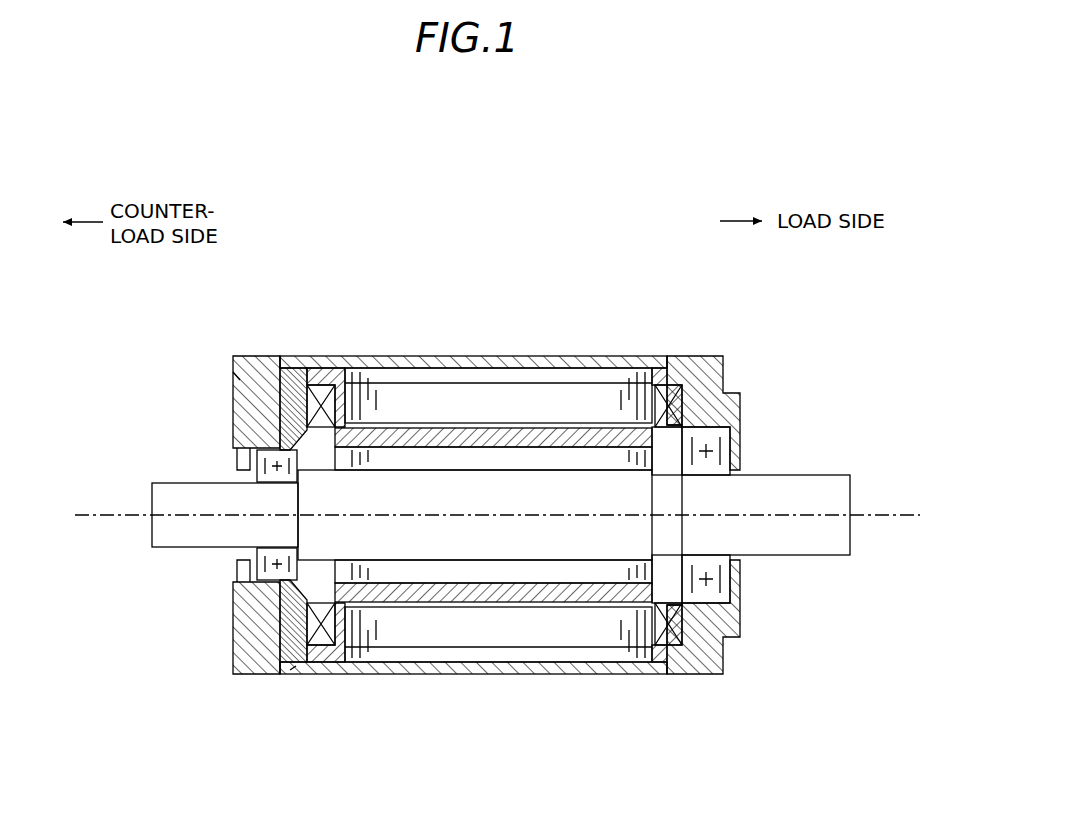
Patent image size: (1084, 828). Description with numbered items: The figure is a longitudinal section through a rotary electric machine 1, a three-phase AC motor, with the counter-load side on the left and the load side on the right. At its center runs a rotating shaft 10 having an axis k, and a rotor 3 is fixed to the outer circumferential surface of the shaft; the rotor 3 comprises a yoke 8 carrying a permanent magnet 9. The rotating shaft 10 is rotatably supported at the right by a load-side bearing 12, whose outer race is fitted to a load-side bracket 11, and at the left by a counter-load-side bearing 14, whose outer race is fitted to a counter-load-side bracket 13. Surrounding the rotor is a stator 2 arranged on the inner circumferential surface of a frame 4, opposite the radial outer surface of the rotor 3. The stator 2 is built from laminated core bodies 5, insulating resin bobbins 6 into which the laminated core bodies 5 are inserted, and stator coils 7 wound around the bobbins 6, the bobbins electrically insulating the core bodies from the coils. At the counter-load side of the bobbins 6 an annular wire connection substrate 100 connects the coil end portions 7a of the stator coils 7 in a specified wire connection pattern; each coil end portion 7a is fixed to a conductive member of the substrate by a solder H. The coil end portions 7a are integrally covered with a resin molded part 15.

The rotary electric machine 1 is at (568, 261).
The stator 2 is at (424, 391).
The rotor 3 is at (456, 572).
The frame 4 is at (378, 675).
The laminated core body 5 is at (469, 392).
The bobbin 6 is at (318, 385).
The stator coil 7 is at (340, 368).
The coil end portion 7a is at (298, 368).
The yoke 8 is at (567, 568).
The permanent magnet 9 is at (512, 600).
The rotating shaft 10 is at (843, 475).
The load-side bracket 11 is at (733, 633).
The load-side bearing 12 is at (740, 573).
The counter-load-side bracket 13 is at (240, 675).
The counter-load-side bearing 14 is at (248, 567).
The resin molded part 15 is at (275, 357).
The wire connection substrate 100 is at (285, 413).
The solder H is at (235, 378).
The axis k is at (897, 515).